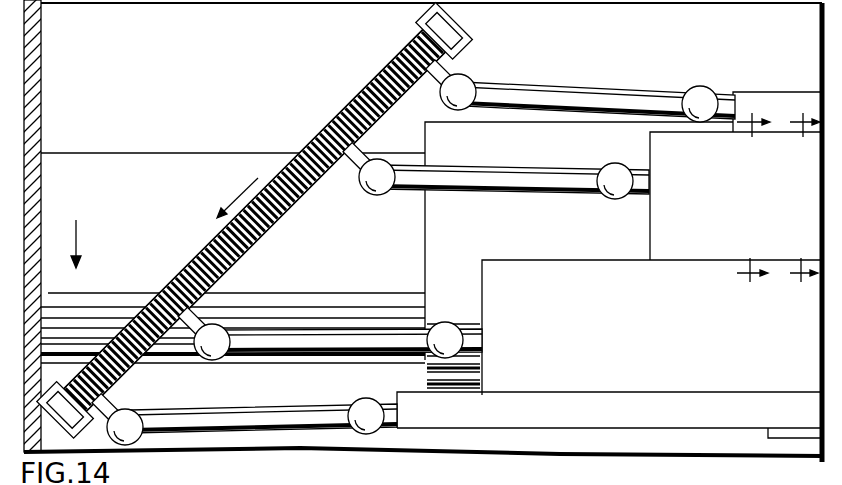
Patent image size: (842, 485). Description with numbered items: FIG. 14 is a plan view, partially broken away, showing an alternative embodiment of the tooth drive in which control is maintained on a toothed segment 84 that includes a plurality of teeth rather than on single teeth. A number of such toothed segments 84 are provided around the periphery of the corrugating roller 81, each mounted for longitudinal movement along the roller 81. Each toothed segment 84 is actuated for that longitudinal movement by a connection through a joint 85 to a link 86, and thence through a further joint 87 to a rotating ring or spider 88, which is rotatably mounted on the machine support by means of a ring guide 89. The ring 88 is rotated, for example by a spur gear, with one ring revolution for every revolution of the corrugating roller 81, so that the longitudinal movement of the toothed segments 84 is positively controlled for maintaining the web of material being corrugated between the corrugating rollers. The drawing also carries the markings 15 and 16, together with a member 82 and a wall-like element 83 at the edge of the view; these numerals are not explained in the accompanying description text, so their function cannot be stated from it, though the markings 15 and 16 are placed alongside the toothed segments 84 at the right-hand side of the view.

The direction indicator 15 is at (753, 202).
The direction indicator 16 is at (805, 202).
The corrugating roller 81 is at (464, 254).
The tie rod 82 is at (268, 318).
The wall 83 is at (40, 42).
The toothed segment 84 is at (776, 96).
The joint 85 is at (697, 88).
The link 86 is at (597, 92).
The joint 87 is at (468, 78).
The rotating ring or spider 88 is at (292, 208).
The ring guide 89 is at (458, 32).